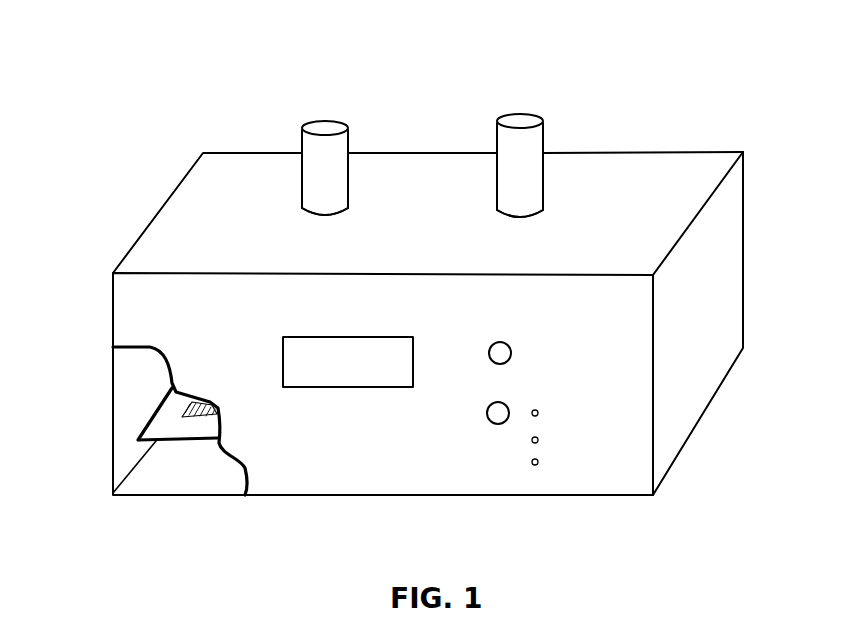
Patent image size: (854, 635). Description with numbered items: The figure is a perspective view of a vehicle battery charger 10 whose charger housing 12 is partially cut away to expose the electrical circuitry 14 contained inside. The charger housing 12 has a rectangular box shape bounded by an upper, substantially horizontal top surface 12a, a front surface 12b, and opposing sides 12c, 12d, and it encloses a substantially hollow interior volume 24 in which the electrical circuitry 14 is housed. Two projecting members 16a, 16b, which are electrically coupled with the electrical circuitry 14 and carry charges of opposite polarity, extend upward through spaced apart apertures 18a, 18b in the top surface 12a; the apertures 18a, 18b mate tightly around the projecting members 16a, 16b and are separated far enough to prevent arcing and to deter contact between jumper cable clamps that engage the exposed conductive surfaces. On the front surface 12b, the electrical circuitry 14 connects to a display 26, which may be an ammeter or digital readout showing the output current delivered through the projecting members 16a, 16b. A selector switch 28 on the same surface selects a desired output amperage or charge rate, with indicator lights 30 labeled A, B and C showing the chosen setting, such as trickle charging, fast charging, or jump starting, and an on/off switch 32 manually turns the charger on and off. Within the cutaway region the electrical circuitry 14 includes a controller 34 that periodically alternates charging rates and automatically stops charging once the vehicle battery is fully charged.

The vehicle battery charger 10 is at (694, 77).
The charger housing 12 is at (720, 252).
The top surface 12a is at (605, 175).
The front surface 12b is at (428, 475).
The side 12c is at (700, 383).
The side 12d is at (113, 318).
The electrical circuitry 14 is at (150, 415).
The projecting member 16a is at (323, 128).
The projecting member 16b is at (517, 118).
The aperture 18a is at (305, 215).
The aperture 18b is at (500, 217).
The interior volume 24 is at (145, 380).
The display 26 is at (342, 387).
The selector switch 28 is at (487, 410).
The indicator lights 30 is at (580, 397).
The on/off switch 32 is at (490, 353).
The controller 34 is at (190, 402).